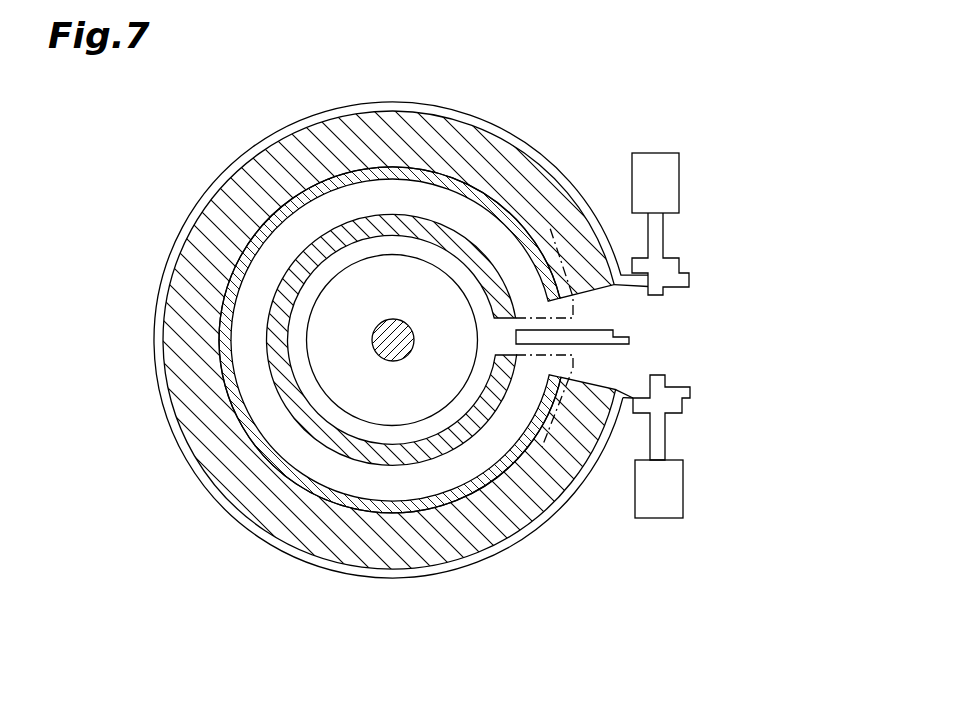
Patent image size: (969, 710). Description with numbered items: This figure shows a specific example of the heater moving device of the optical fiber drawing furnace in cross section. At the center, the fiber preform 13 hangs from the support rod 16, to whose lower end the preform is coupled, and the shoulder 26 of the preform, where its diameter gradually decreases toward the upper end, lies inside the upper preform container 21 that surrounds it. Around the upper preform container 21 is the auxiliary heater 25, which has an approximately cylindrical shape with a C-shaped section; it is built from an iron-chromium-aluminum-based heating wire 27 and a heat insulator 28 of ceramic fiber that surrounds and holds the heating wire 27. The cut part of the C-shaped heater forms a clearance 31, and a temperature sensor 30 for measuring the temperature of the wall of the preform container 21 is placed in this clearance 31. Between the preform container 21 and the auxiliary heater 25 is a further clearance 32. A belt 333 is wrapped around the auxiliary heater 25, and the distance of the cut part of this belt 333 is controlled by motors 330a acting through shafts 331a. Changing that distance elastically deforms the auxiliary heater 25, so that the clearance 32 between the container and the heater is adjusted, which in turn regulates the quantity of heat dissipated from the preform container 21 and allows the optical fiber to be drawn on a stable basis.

The fiber preform 13 is at (337, 408).
The support rod 16 is at (398, 358).
The upper preform container 21 is at (470, 258).
The auxiliary heater 25 is at (253, 48).
The shoulder 26 is at (370, 408).
The heating wire 27 is at (298, 206).
The heat insulator 28 is at (432, 143).
The temperature sensor 30 is at (614, 330).
The clearance 31 is at (572, 373).
The clearance 32 is at (242, 333).
The belt 333 is at (485, 125).
The motor 330a is at (679, 178).
The shaft 331a is at (663, 232).